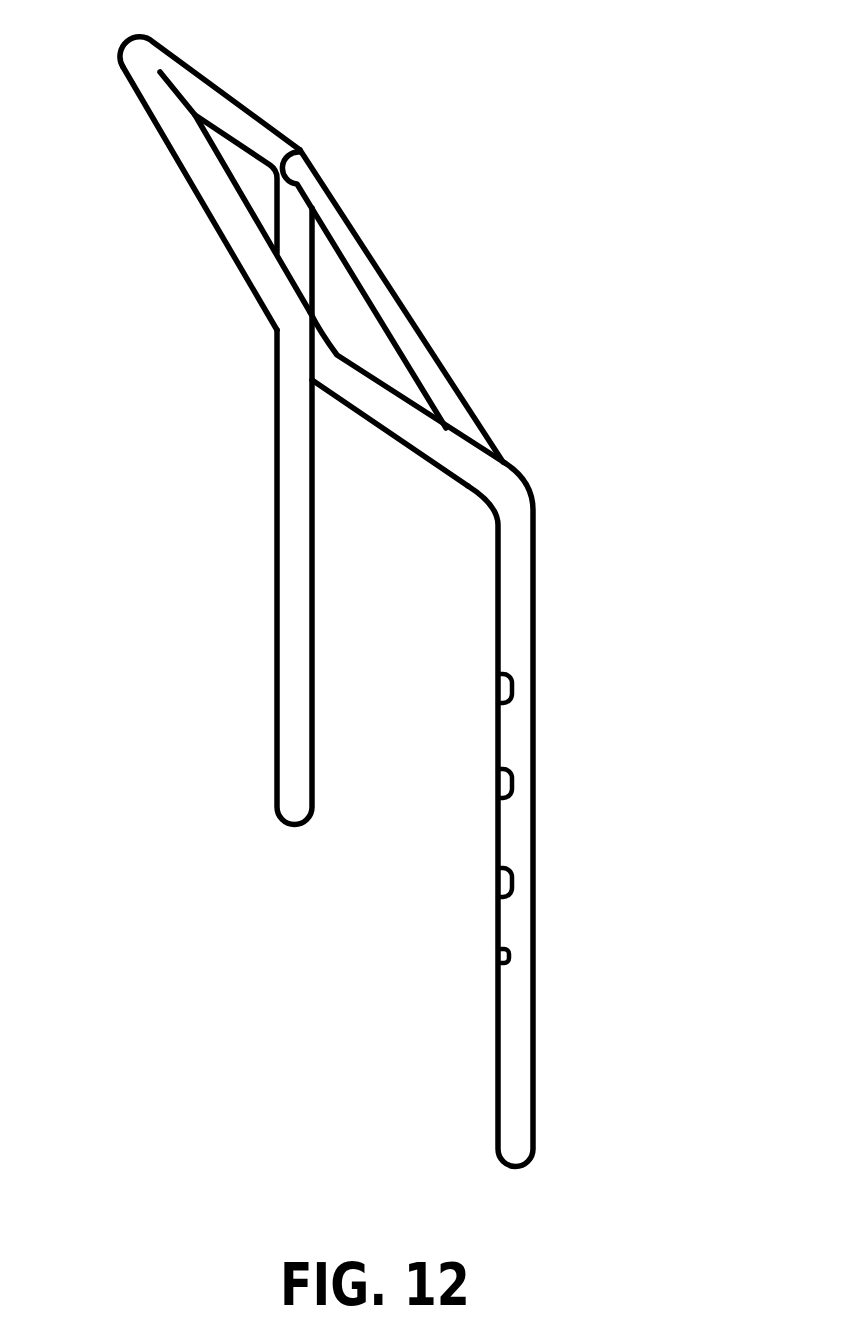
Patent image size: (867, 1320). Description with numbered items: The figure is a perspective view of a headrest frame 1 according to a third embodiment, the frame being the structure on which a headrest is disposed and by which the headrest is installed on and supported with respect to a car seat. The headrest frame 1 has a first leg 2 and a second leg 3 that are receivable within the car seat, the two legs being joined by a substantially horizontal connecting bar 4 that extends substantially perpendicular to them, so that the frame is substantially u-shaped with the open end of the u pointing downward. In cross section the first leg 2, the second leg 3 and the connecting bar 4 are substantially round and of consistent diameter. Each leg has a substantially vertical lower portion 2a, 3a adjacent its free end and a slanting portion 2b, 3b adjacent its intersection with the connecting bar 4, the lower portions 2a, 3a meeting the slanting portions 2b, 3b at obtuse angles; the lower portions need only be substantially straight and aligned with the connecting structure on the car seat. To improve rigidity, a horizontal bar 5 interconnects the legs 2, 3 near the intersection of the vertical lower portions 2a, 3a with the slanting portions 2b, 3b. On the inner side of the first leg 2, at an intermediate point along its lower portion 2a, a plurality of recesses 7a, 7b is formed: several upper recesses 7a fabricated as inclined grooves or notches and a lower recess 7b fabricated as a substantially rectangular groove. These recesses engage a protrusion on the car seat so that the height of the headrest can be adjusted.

The headrest frame 1 is at (416, 148).
The first leg 2 is at (496, 739).
The substantially vertical lower portion of the first leg 2a is at (535, 840).
The slanting portion of the first leg 2b is at (412, 427).
The second leg 3 is at (222, 415).
The substantially vertical lower portion of the second leg 3a is at (277, 493).
The slanting portion of the second leg 3b is at (207, 97).
The connecting bar 4 is at (232, 228).
The horizontal bar 5 is at (410, 333).
The upper recesses 7a is at (498, 683).
The lower recess 7b is at (498, 953).